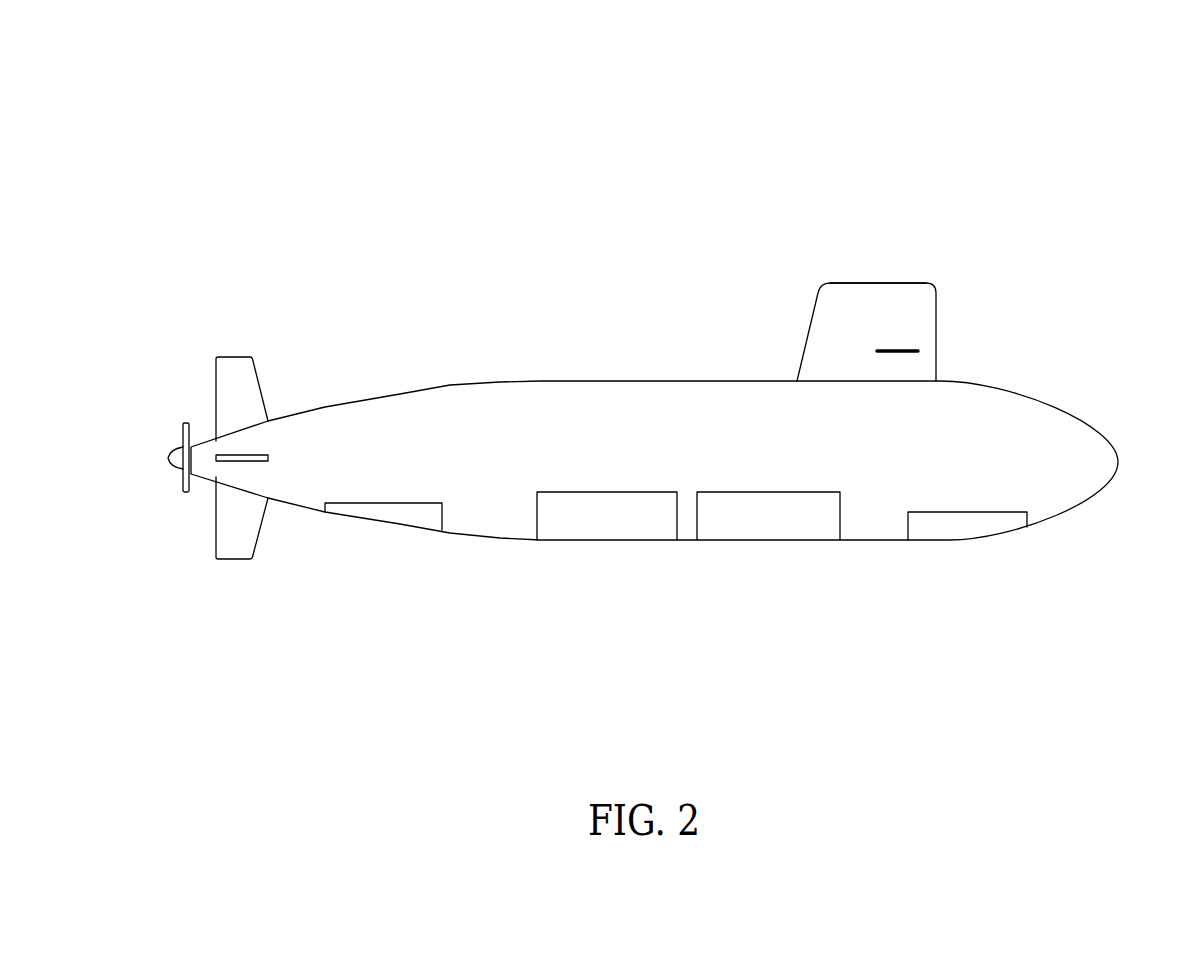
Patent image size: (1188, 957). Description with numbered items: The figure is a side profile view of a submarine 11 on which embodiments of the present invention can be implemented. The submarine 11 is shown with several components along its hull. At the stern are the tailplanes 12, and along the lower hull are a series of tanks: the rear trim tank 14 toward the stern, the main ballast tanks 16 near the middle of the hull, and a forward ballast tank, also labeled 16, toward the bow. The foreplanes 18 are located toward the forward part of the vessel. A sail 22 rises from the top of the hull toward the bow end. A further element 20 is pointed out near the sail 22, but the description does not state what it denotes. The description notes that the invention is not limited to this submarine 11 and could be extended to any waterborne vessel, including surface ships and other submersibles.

The submarine 11 is at (643, 354).
The tailplanes 12 is at (256, 324).
The rear trim tank 14 is at (383, 599).
The main ballast tanks 16 is at (761, 584).
The foreplanes 18 is at (967, 609).
The sail 20 is at (1008, 336).
The sail 22 is at (878, 244).